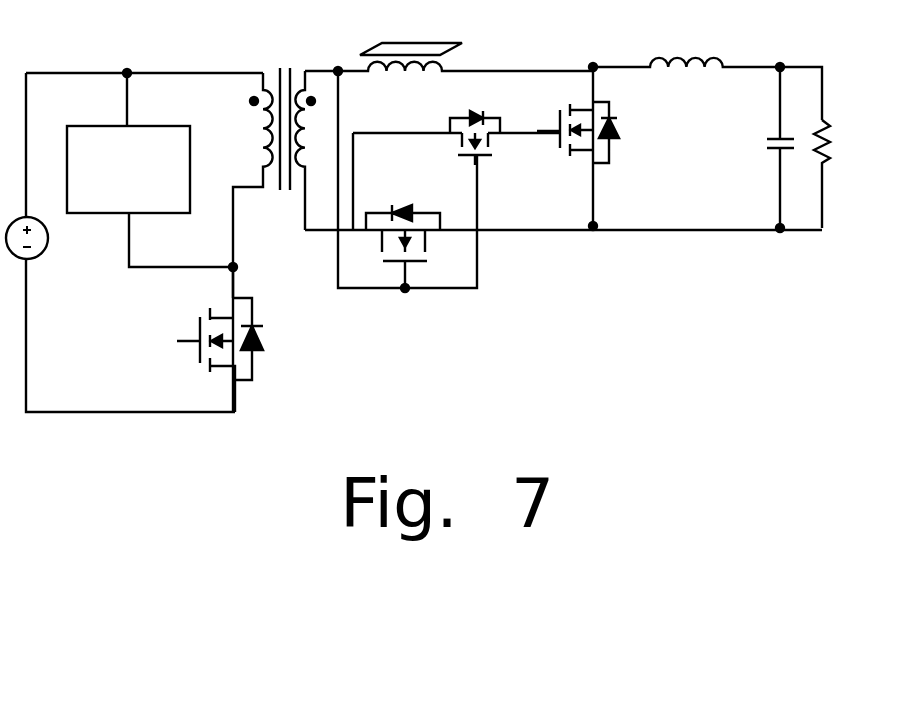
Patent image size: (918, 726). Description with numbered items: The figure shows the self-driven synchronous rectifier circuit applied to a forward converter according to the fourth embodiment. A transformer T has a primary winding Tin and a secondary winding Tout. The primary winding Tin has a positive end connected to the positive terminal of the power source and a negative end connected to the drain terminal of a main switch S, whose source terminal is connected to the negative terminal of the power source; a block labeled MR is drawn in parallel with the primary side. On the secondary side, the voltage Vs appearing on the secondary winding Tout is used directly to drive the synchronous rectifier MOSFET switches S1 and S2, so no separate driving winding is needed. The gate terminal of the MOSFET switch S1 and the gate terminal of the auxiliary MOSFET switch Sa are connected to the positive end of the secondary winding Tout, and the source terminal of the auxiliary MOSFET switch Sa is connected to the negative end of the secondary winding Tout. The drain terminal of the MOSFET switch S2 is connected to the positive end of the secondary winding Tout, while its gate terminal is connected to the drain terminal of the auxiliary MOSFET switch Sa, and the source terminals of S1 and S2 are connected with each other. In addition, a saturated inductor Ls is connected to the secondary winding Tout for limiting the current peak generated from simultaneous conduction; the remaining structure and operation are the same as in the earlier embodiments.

The transformer T is at (272, 158).
The primary winding Tin is at (239, 185).
The secondary winding Tout is at (563, 161).
The secondary voltage Vs is at (316, 150).
The saturated inductor Ls is at (465, 39).
The auxiliary MOSFET switch Sa is at (472, 133).
The MOSFET switch S1 is at (403, 236).
The MOSFET switch S2 is at (599, 146).
The main switch S is at (205, 339).
The magnetic reset circuit MR is at (150, 170).